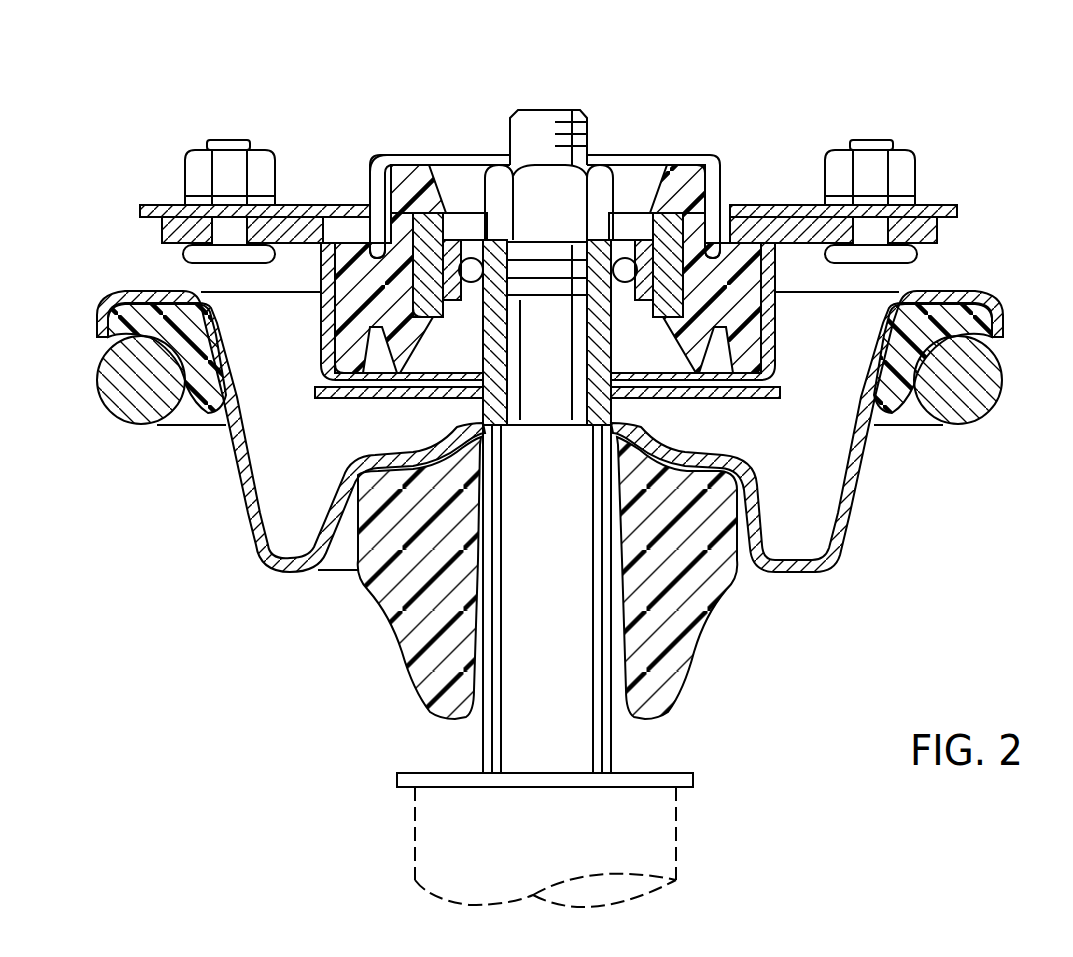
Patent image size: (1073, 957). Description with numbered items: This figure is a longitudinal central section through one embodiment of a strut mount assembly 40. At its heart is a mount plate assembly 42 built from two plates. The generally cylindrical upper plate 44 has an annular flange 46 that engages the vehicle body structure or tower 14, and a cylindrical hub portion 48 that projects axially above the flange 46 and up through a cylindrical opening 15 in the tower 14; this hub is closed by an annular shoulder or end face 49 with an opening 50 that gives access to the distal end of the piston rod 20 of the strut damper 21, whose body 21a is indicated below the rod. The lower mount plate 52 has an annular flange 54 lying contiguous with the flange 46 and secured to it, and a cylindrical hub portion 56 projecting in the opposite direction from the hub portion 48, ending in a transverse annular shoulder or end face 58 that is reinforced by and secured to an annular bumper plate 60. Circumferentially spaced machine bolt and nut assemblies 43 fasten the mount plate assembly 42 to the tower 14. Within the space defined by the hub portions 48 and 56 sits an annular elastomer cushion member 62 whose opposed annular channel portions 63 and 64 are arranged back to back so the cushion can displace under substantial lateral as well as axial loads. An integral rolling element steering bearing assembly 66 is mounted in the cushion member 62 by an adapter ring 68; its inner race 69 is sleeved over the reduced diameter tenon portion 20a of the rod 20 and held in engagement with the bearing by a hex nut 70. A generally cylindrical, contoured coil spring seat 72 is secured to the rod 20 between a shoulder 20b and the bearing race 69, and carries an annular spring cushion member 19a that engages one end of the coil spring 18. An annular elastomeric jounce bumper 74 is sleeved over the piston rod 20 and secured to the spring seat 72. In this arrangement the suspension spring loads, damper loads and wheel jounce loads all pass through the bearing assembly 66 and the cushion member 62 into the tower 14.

The vehicle body structure or tower 14 is at (166, 204).
The cylindrical opening 15 is at (714, 203).
The coil spring 18 is at (960, 420).
The annular spring cushion member 19a is at (1000, 340).
The piston rod 20 is at (483, 738).
The reduced diameter tenon portion 20a is at (545, 243).
The shoulder 20b is at (545, 432).
The strut damper 21 is at (402, 832).
The blade hub 21a is at (678, 800).
The strut mount assembly 40 is at (786, 140).
The mount plate assembly 42 is at (370, 148).
The machine bolt and nut assemblies 43 is at (229, 140).
The upper plate 44 is at (688, 160).
The annular flange 46 is at (195, 228).
The cylindrical hub portion 48 is at (370, 168).
The annular shoulder or end face 49 is at (396, 162).
The opening 50 is at (455, 162).
The lower mount plate 52 is at (776, 250).
The annular flange 54 is at (172, 250).
The cylindrical hub portion 56 is at (324, 330).
The transverse annular shoulder or end face 58 is at (366, 399).
The annular bumper plate 60 is at (712, 399).
The annular elastomer cushion member 62 is at (670, 163).
The annular channel portion 63 is at (738, 355).
The annular channel portion 64 is at (322, 258).
The rolling element steering bearing assembly 66 is at (625, 218).
The adapter ring 68 is at (418, 240).
The inner race 69 is at (612, 378).
The hex nut 70 is at (497, 165).
The coil spring seat 72 is at (950, 290).
The jounce bumper 74 is at (697, 640).